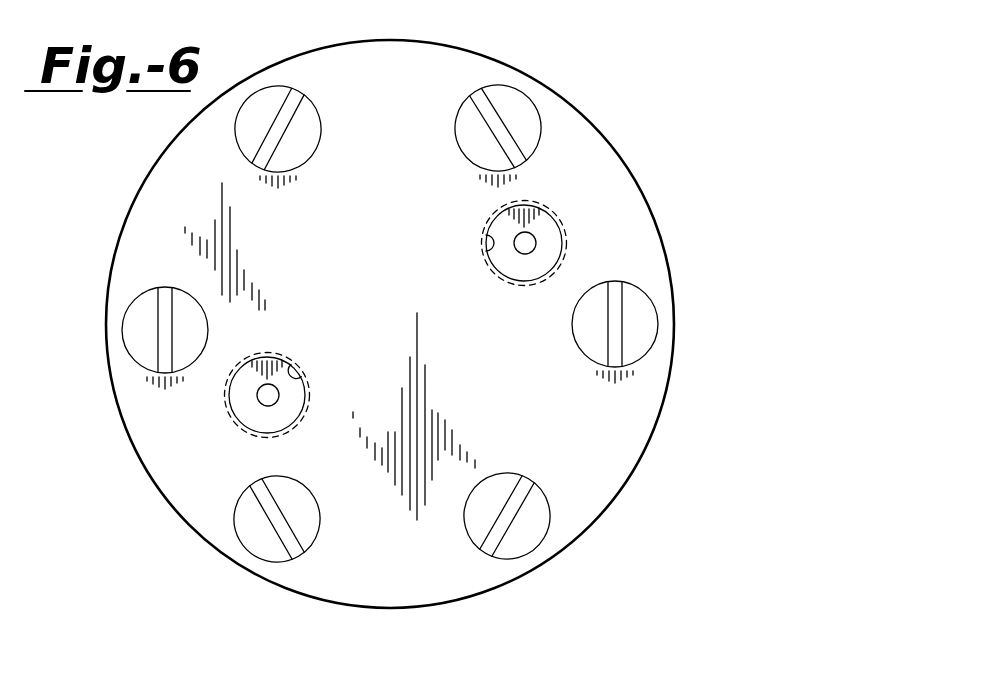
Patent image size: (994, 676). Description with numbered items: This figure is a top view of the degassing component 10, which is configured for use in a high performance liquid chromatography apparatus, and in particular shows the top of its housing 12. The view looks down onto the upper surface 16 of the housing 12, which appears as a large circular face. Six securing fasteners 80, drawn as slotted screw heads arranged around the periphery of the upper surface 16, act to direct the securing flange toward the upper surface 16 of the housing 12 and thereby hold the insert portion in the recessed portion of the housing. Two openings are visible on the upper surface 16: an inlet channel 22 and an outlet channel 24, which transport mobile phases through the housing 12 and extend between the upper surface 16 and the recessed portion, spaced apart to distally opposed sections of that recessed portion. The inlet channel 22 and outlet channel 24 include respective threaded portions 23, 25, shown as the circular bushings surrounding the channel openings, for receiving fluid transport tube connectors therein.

The degassing component 10 is at (632, 117).
The housing 12 is at (683, 255).
The upper surface 16 is at (503, 375).
The inlet channel 22 is at (258, 396).
The threaded portion 23 is at (285, 362).
The outlet channel 24 is at (528, 252).
The threaded portion 25 is at (488, 243).
The securing fasteners 80 is at (510, 87).